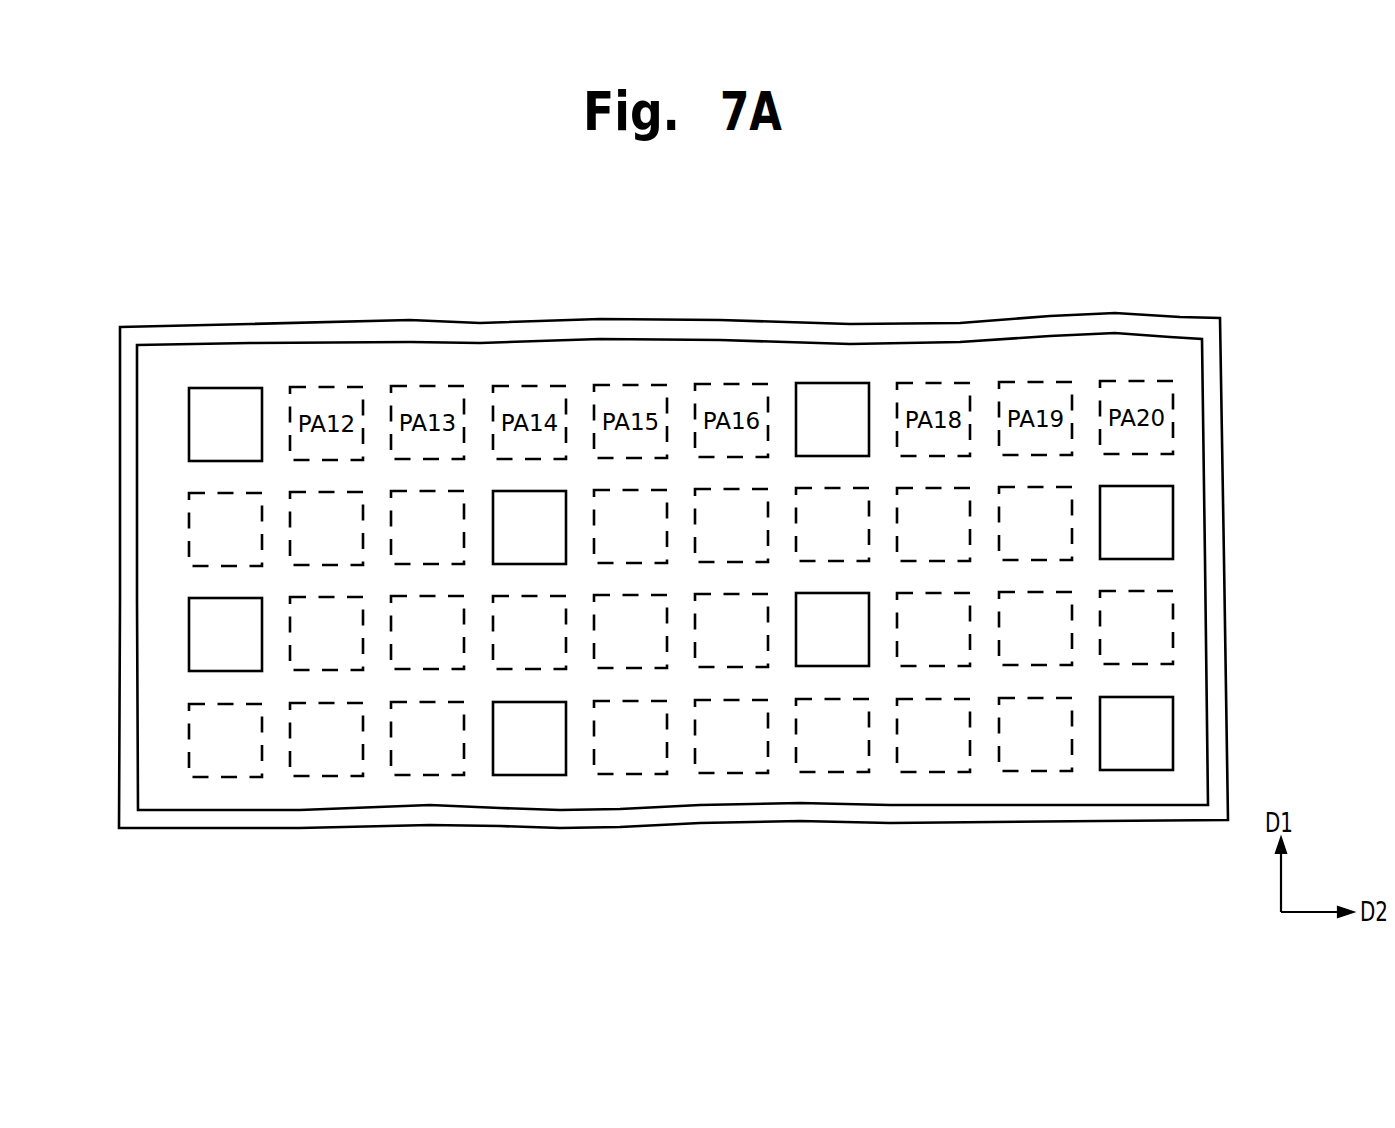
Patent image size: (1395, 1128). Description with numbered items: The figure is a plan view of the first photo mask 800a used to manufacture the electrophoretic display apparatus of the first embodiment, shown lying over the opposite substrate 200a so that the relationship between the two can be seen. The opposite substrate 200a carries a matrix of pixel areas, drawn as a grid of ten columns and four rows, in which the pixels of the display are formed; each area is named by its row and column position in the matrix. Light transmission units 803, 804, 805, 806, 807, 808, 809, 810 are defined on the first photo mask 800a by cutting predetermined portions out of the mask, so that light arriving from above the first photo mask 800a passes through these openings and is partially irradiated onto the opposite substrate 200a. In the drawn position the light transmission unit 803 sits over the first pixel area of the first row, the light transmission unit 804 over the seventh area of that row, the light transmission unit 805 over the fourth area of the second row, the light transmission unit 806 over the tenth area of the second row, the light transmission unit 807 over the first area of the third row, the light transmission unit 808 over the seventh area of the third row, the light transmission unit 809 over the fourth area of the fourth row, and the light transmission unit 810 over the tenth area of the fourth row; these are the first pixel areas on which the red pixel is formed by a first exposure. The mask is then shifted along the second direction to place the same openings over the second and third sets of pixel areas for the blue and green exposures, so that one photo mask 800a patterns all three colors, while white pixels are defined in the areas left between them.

The opposite substrate 200a is at (1213, 360).
The first photo mask 800a is at (1192, 398).
The light transmission unit 803 is at (221, 388).
The light transmission unit 804 is at (828, 383).
The light transmission unit 805 is at (543, 491).
The light transmission unit 806 is at (1173, 520).
The light transmission unit 807 is at (189, 633).
The light transmission unit 808 is at (845, 593).
The light transmission unit 809 is at (527, 775).
The light transmission unit 810 is at (1173, 735).